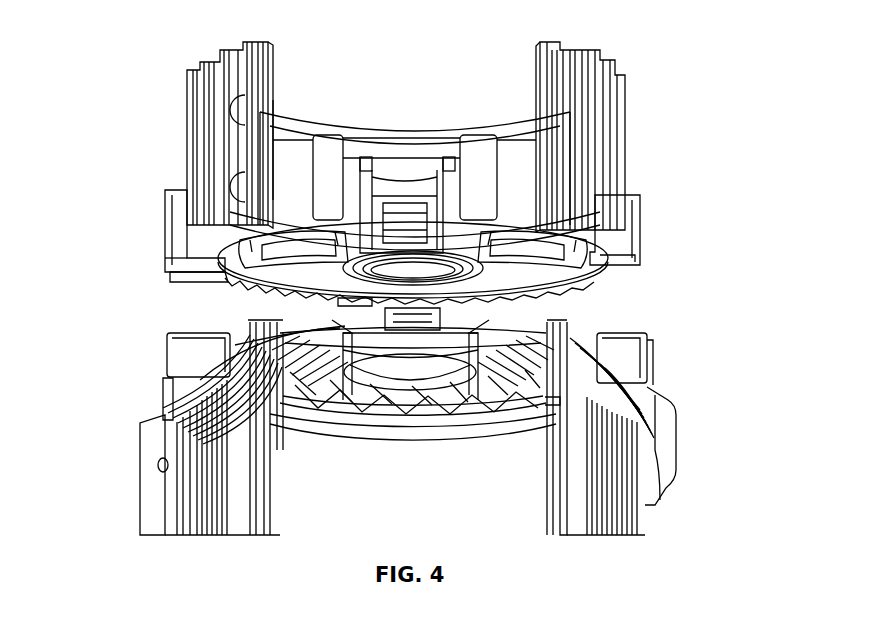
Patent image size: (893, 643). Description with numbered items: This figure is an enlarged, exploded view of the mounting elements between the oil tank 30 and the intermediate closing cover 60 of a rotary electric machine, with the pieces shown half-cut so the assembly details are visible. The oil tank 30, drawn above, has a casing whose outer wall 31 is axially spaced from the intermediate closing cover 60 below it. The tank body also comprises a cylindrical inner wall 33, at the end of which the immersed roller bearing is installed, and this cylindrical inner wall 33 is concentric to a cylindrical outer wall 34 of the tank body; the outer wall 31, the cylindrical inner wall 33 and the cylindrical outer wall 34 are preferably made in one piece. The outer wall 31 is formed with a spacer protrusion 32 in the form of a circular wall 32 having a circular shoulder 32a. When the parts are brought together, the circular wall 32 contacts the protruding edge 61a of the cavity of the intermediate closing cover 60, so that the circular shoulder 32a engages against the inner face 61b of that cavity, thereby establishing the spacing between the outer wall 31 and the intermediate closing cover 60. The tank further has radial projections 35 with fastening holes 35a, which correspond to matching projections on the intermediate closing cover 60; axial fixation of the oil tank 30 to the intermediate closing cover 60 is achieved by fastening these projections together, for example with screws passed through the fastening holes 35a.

The oil tank 30 is at (405, 175).
The outer wall 31 is at (512, 212).
The spacer protrusion 32 is at (472, 249).
The circular shoulder 32a is at (468, 297).
The cylindrical inner wall 33 is at (465, 183).
The cylindrical outer wall 34 is at (173, 137).
The radial projections 35 is at (177, 263).
The fastening holes 35a is at (178, 281).
The intermediate closing cover 60 is at (405, 435).
The protruding edge 61a is at (444, 325).
The inner face 61b is at (418, 384).